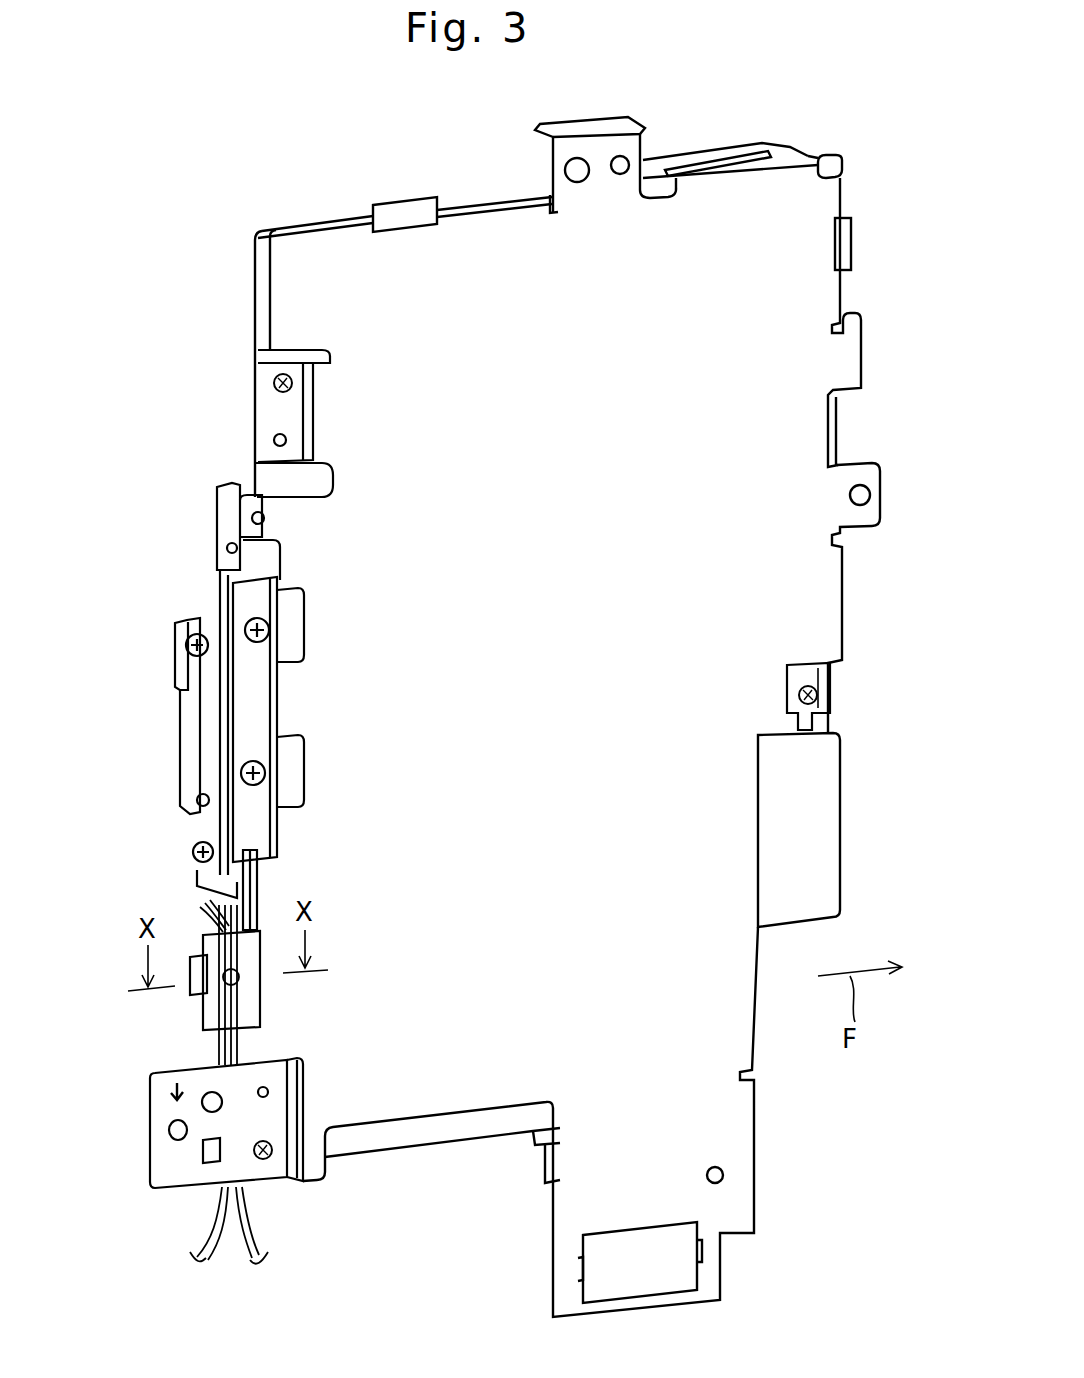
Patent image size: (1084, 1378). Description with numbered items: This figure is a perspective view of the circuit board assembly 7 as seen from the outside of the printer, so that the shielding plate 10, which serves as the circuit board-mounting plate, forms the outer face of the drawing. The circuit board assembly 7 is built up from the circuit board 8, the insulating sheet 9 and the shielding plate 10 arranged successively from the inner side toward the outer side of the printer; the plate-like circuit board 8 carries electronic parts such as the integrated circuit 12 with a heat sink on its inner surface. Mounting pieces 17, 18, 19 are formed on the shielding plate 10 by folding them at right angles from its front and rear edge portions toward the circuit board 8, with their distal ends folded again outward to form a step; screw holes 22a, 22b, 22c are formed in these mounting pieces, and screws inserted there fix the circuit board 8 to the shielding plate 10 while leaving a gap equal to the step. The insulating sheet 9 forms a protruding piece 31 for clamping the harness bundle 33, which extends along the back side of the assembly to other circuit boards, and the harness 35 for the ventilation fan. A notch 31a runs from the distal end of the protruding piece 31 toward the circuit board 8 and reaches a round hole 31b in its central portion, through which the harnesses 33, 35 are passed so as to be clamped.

The circuit board assembly 7 is at (218, 158).
The circuit board 8 is at (252, 470).
The insulating sheet 9 is at (842, 845).
The shielding plate 10 is at (845, 610).
The integrated circuit 12 is at (185, 662).
The mounting piece 17 is at (268, 412).
The mounting piece 18 is at (165, 1110).
The mounting piece 19 is at (825, 685).
The screw hole 22a is at (800, 696).
The screw hole 22b is at (276, 375).
The screw hole 22c is at (270, 1145).
The protruding piece 31 is at (200, 1013).
The notch 31a is at (195, 970).
The round hole 31b is at (232, 975).
The harness bundle 33 is at (200, 1237).
The harness 35 is at (255, 1235).